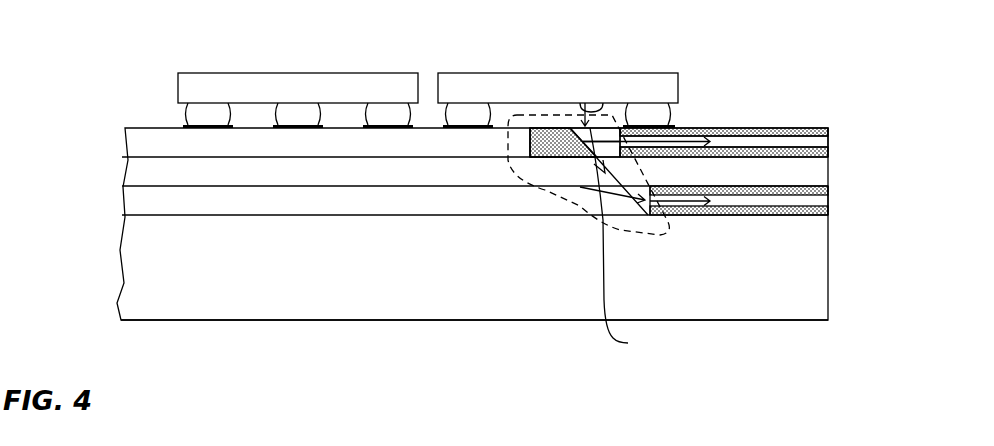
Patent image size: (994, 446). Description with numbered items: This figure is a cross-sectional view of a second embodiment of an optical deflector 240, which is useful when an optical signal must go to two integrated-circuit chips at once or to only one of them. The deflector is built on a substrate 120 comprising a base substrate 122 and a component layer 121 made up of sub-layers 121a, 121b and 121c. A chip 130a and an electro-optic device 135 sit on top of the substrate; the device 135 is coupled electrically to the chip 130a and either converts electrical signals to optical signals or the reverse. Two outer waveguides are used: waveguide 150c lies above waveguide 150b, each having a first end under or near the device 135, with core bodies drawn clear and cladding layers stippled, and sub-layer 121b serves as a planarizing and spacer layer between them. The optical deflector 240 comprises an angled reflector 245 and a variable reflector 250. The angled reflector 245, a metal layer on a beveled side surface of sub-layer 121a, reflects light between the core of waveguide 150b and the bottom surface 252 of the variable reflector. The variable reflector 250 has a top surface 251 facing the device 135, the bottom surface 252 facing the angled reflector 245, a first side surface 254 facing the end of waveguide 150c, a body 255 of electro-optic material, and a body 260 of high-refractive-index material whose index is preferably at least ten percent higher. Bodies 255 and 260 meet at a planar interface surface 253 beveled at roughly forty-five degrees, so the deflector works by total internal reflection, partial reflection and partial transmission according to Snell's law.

The substrate 120 is at (125, 128).
The component layer 121 is at (418, 171).
The sub-layer of component layer 121a is at (445, 203).
The sub-layer of component layer 121b is at (137, 170).
The sub-layer of component layer 121c is at (133, 140).
The base substrate 122 is at (122, 279).
The chip 130a is at (297, 72).
The electro-optic device 135 is at (605, 106).
The outer waveguide 150b is at (828, 217).
The outer waveguide 150c is at (828, 129).
The optical deflector 240 is at (537, 115).
The angled reflector 245 is at (629, 242).
The variable reflector 250 is at (530, 130).
The top surface 251 is at (553, 142).
The bottom surface 252 is at (547, 157).
The interface surface 253 is at (560, 157).
The first side surface 254 is at (661, 159).
The body of electro-optic material 255 is at (530, 145).
The body of high-refractive index material 260 is at (608, 134).